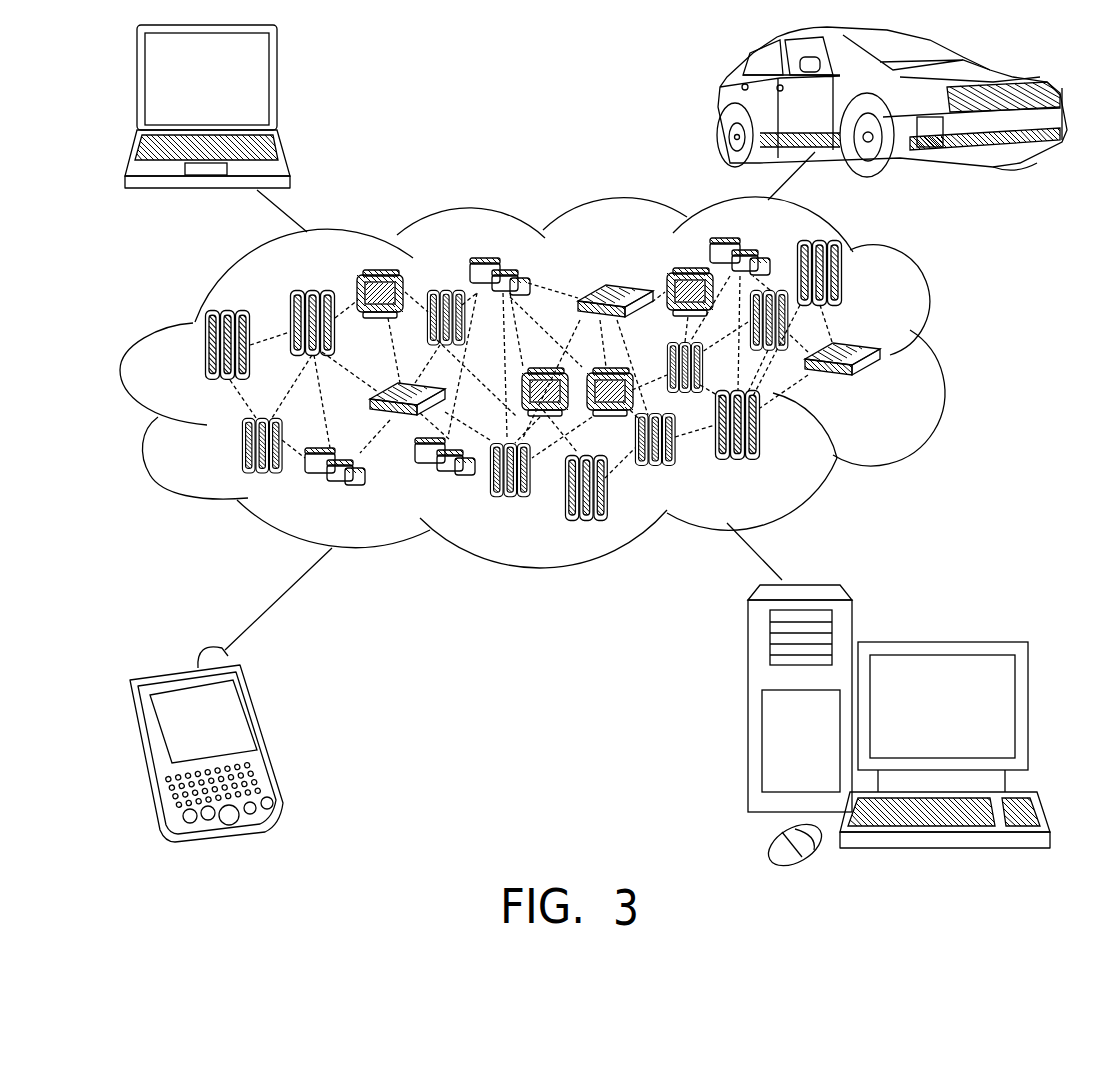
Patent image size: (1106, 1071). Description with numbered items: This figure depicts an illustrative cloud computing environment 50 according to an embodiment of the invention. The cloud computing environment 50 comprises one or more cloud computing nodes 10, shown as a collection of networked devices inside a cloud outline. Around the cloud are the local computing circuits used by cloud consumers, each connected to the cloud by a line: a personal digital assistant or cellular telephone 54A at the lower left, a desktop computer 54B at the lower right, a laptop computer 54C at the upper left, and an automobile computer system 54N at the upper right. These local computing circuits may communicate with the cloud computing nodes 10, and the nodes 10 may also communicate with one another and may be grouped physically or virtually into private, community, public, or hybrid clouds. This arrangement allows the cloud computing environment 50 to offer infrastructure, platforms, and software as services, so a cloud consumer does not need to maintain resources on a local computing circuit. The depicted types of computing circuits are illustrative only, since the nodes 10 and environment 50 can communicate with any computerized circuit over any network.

The cloud computing node 10 is at (890, 388).
The cloud computing environment 50 is at (945, 352).
The personal digital assistant or cellular telephone 54A is at (268, 738).
The desktop computer 54B is at (940, 640).
The laptop computer 54C is at (278, 87).
The automobile computer system 54N is at (718, 100).